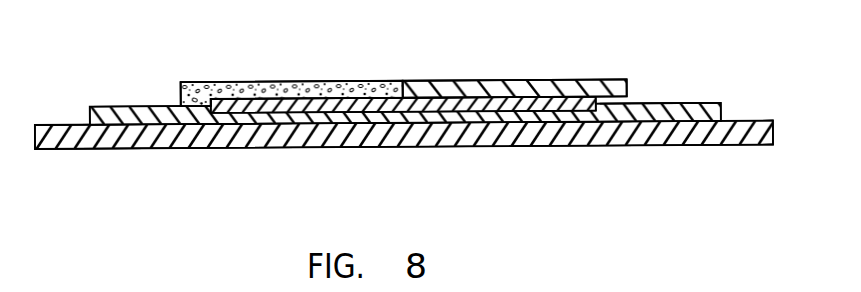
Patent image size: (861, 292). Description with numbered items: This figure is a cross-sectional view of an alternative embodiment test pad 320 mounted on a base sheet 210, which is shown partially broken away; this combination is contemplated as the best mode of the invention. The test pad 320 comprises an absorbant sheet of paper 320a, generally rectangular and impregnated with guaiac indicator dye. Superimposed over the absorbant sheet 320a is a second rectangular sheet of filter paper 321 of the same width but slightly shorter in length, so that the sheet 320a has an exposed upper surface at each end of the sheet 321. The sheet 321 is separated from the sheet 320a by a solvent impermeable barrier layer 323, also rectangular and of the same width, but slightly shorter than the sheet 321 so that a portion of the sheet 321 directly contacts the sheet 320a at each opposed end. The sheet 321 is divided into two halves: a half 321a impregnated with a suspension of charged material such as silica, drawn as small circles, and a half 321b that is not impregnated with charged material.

The base sheet 210 is at (325, 148).
The test pad 320 is at (123, 107).
The absorbant sheet of paper 320a is at (682, 102).
The second rectangular sheet of filter paper 321 is at (610, 81).
The half impregnated with charged material 321a is at (292, 82).
The half not impregnated with charged material 321b is at (570, 80).
The solvent impermeable barrier layer 323 is at (437, 97).